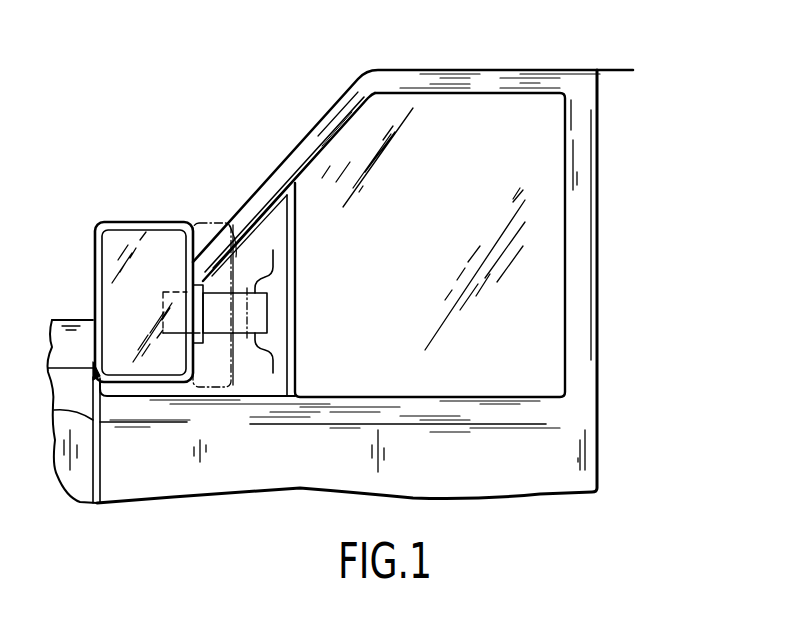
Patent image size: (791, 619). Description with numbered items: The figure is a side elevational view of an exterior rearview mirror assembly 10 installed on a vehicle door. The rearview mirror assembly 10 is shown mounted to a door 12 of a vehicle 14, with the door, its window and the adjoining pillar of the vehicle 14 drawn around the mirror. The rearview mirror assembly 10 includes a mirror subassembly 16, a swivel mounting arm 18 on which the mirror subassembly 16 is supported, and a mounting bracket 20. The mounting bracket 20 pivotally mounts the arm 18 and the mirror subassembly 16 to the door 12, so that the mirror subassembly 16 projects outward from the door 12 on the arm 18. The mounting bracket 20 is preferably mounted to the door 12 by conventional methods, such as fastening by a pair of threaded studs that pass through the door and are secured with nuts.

The exterior rearview mirror assembly 10 is at (188, 290).
The door 12 is at (283, 165).
The vehicle 14 is at (303, 90).
The mirror subassembly 16 is at (115, 193).
The swivel mounting arm 18 is at (217, 363).
The mounting bracket 20 is at (245, 200).